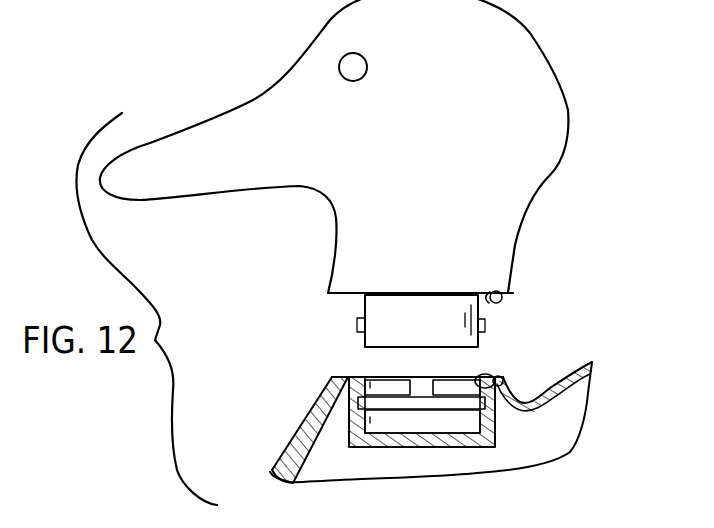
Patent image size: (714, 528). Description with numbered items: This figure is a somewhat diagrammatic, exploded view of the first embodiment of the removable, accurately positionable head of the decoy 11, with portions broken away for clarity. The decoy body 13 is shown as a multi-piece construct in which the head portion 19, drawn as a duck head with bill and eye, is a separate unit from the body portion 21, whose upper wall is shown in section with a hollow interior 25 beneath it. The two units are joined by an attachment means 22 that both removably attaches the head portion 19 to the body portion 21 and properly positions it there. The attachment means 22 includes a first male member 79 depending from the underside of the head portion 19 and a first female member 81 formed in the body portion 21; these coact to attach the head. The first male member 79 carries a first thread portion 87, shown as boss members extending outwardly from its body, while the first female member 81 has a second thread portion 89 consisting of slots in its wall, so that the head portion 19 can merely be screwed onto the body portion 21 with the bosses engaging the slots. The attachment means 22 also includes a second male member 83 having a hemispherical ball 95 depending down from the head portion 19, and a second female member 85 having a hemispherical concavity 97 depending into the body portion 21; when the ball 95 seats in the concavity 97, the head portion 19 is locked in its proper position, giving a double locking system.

The decoy 11 is at (606, 42).
The decoy body 13 is at (569, 356).
The head portion 19 is at (520, 207).
The body portion 21 is at (303, 432).
The attachment means 22 is at (340, 342).
The hollow interior 25 is at (552, 443).
The first male member 79 is at (373, 303).
The first female member 81 is at (455, 385).
The second male member 83 is at (553, 317).
The second female member 85 is at (542, 375).
The first thread portion 87 is at (357, 324).
The second thread portion 89 is at (393, 402).
The hemispherical ball 95 is at (504, 296).
The hemispherical concavity 97 is at (492, 376).